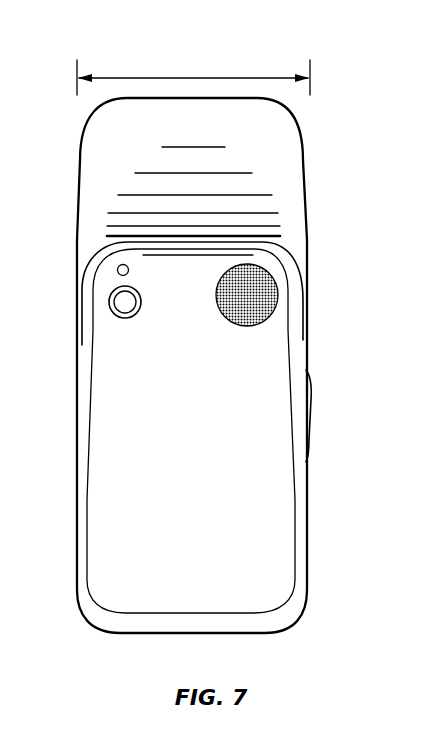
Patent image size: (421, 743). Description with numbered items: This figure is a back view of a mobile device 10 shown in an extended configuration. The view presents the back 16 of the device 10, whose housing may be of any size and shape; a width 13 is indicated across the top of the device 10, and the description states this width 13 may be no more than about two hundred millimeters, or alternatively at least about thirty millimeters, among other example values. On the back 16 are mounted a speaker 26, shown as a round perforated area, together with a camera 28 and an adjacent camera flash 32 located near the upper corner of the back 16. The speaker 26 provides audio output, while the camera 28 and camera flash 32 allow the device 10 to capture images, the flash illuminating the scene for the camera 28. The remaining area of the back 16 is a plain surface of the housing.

The mobile device 10 is at (320, 118).
The width 13 is at (200, 77).
The back 16 is at (198, 460).
The speaker 26 is at (272, 273).
The camera 28 is at (120, 308).
The camera flash 32 is at (118, 268).